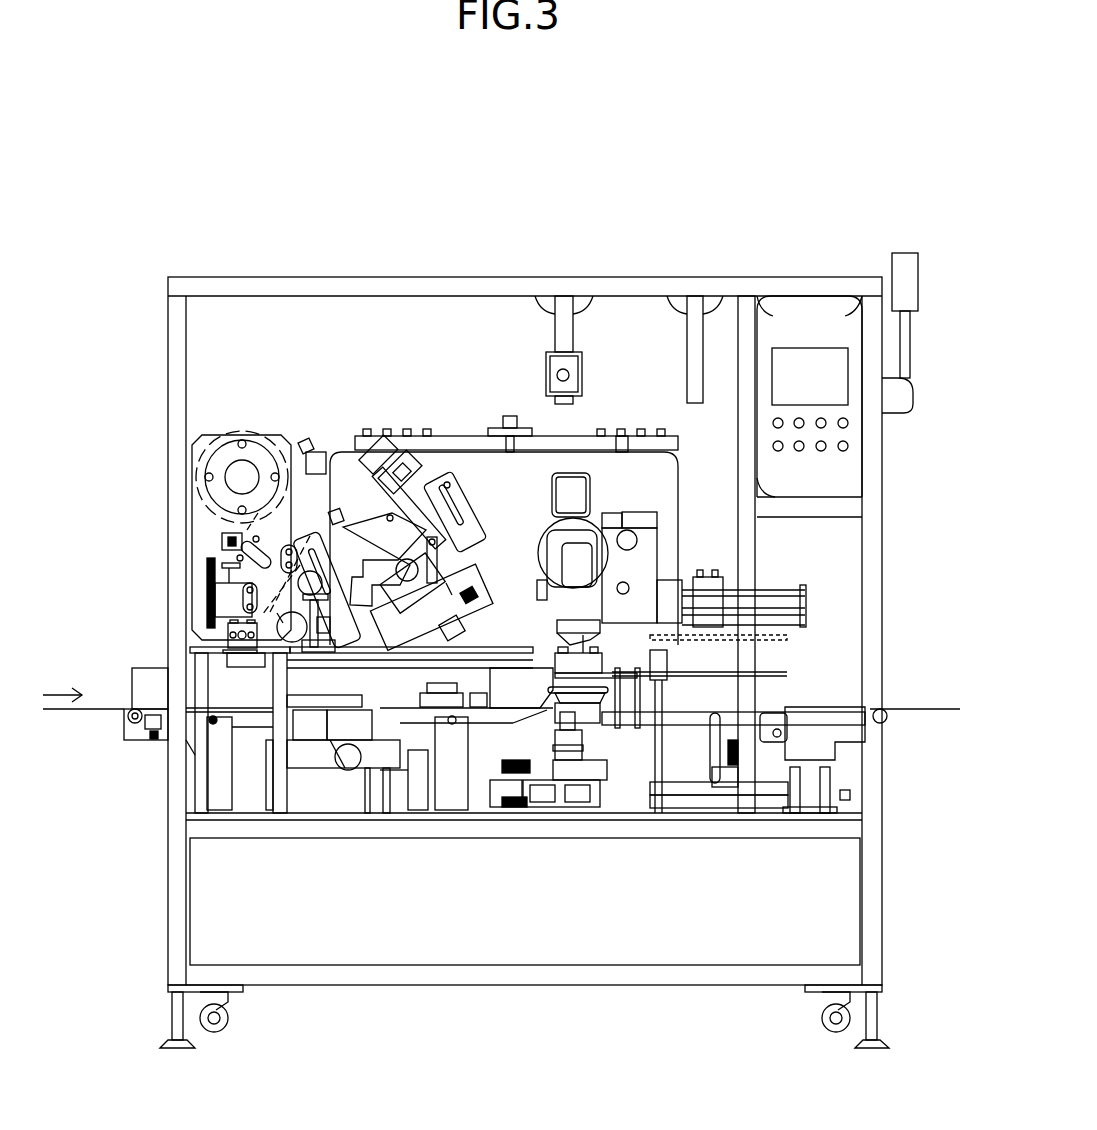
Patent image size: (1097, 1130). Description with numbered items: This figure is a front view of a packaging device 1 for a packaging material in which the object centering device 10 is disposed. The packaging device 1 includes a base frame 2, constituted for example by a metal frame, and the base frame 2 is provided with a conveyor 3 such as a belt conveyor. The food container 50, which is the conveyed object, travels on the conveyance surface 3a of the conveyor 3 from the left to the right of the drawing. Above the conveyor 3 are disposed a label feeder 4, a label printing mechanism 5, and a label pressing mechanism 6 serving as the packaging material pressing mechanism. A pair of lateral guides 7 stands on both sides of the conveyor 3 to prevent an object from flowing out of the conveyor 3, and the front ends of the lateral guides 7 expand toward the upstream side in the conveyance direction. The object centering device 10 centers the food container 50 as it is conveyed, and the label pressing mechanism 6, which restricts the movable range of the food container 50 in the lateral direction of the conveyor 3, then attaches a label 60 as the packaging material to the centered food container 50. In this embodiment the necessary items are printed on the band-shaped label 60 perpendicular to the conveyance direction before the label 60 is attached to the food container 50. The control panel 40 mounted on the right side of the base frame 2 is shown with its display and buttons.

The packaging device 1 is at (120, 266).
The base frame 2 is at (493, 294).
The conveyor 3 is at (125, 726).
The conveyance surface 3a is at (108, 705).
The label feeder 4 is at (270, 440).
The label printing mechanism 5 is at (465, 492).
The label pressing mechanism 6 is at (572, 528).
The lateral guide 7 is at (148, 668).
The object centering device 10 is at (100, 582).
The control panel 40 is at (803, 308).
The food container 50 is at (600, 700).
The label 60 is at (452, 560).